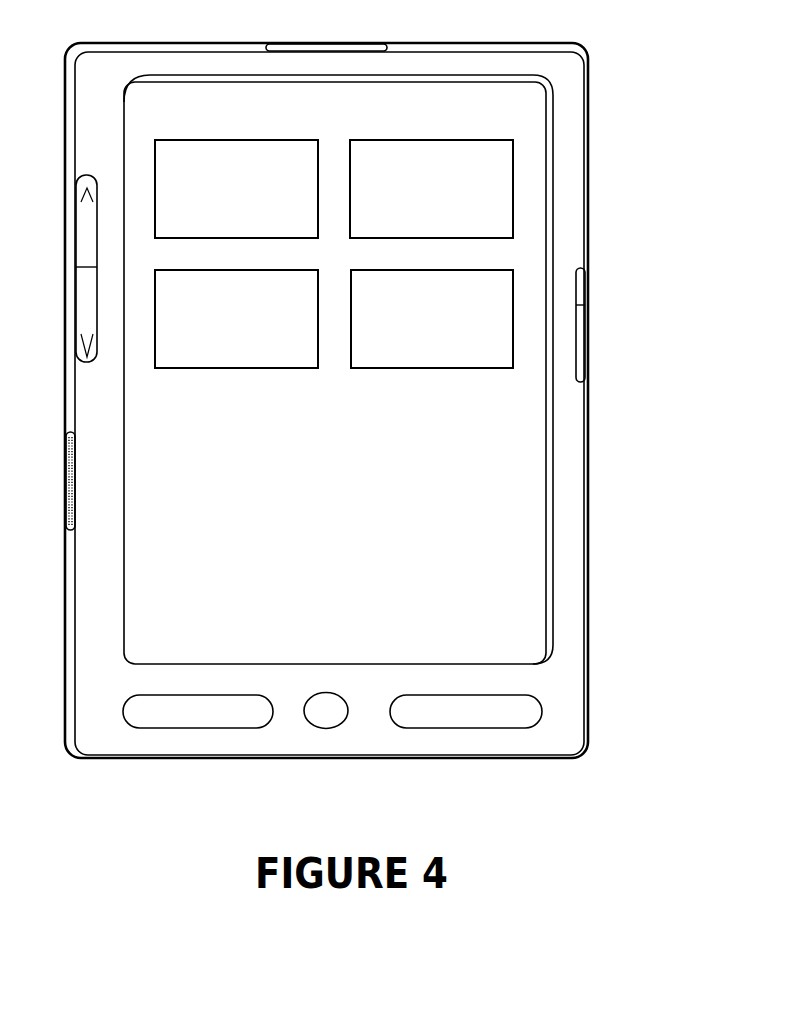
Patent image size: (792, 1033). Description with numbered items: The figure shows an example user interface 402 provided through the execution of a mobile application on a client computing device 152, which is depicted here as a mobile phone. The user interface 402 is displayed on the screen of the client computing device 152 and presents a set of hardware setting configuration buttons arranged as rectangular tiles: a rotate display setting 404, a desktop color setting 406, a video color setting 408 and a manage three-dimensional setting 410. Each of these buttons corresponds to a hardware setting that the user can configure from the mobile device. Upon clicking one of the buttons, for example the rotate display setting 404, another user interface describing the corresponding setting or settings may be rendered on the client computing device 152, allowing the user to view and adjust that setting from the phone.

The client computing device 152 is at (421, 450).
The user interface 402 is at (448, 369).
The rotate display setting 404 is at (293, 220).
The desktop color setting 406 is at (488, 220).
The video color setting 408 is at (293, 339).
The manage 3D setting 410 is at (488, 339).